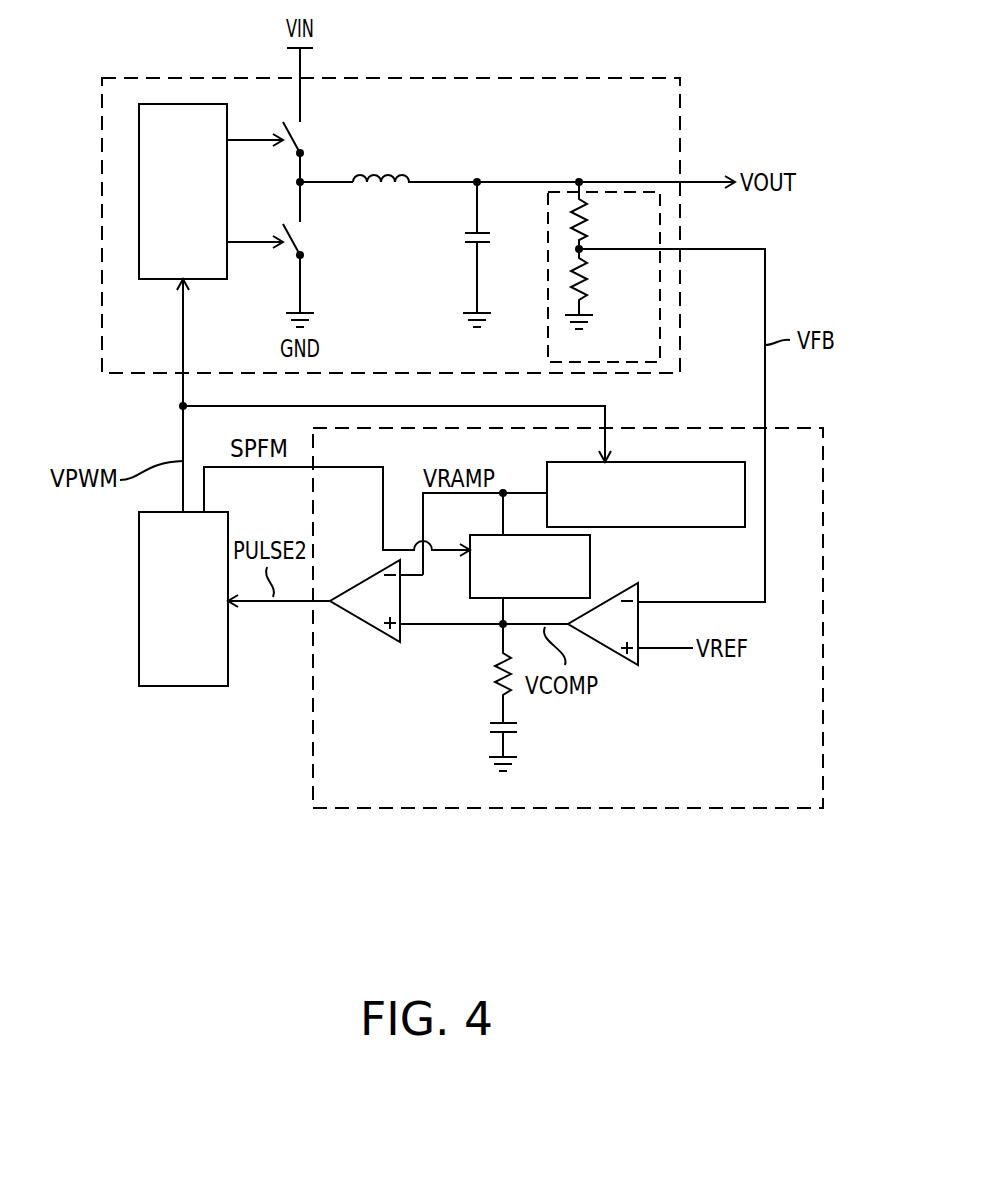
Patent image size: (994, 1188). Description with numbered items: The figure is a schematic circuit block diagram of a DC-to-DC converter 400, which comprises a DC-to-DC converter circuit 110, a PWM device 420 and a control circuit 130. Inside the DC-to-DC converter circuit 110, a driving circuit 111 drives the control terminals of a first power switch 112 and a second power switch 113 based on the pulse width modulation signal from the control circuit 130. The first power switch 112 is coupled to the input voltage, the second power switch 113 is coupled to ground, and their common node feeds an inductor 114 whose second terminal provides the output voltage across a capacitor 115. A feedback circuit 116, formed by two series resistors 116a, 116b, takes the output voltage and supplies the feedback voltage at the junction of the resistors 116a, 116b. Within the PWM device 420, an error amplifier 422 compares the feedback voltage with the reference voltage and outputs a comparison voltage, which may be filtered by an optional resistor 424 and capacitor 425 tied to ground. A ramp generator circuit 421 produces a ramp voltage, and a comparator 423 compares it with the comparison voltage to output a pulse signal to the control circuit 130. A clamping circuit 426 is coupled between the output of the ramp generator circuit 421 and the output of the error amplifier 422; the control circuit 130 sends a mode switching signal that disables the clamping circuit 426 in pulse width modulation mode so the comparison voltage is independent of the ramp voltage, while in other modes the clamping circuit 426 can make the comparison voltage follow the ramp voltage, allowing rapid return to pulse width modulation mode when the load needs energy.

The DC-to-DC converter circuit 110 is at (590, 78).
The driving circuit 111 is at (185, 100).
The first power switch 112 is at (303, 132).
The second power switch 113 is at (312, 246).
The inductor 114 is at (372, 165).
The capacitor 115 is at (460, 235).
The feedback circuit 116 is at (577, 272).
The resistor 116a is at (585, 213).
The resistor 116b is at (585, 276).
The control circuit 130 is at (139, 637).
The DC-to-DC converter 400 is at (120, 852).
The PWM device 420 is at (313, 752).
The ramp generator circuit 421 is at (547, 470).
The error amplifier 422 is at (613, 652).
The comparator 423 is at (368, 625).
The resistor 424 is at (497, 662).
The capacitor 425 is at (490, 725).
The clamping circuit 426 is at (590, 567).